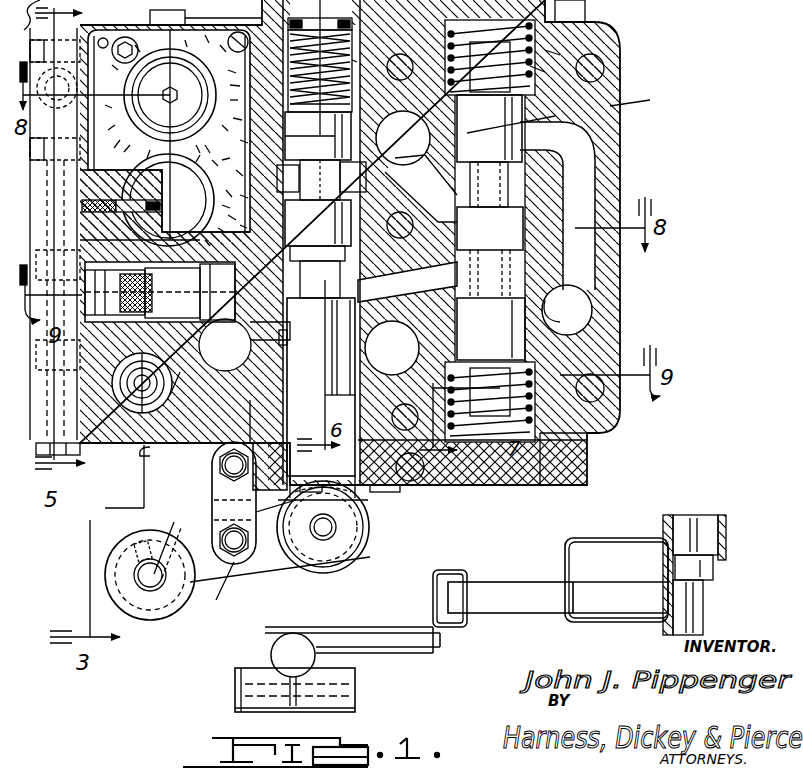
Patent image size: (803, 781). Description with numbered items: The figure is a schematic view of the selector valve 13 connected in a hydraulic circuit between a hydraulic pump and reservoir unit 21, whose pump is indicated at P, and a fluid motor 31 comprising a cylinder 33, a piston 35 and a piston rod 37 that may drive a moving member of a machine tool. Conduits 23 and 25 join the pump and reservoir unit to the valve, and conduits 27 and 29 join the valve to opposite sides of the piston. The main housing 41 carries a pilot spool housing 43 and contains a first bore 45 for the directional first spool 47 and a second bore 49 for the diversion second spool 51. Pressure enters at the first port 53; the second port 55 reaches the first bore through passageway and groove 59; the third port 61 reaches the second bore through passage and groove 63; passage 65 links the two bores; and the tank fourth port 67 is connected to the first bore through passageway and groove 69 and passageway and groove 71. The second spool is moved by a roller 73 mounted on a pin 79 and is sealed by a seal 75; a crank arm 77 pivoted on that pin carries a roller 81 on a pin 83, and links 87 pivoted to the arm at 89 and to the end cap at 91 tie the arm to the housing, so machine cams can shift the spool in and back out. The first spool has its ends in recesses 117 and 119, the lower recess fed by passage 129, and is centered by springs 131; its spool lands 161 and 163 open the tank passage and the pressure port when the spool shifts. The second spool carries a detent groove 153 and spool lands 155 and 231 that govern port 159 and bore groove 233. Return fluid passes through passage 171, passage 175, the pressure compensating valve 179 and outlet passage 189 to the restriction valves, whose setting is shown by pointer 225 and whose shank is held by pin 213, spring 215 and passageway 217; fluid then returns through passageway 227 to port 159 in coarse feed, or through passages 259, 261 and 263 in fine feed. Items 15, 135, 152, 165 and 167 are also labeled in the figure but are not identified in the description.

The selector valve 13 is at (628, 167).
The cylinder supply conduit 15 is at (514, 580).
The hydraulic pump and reservoir unit 21 is at (238, 690).
The conduit 23 is at (433, 590).
The conduit 25 is at (372, 622).
The conduit 27 is at (638, 528).
The conduit 29 is at (608, 620).
The fluid motor 31 is at (720, 520).
The cylinder 33 is at (716, 590).
The piston 35 is at (718, 560).
The piston rod 37 is at (704, 612).
The main housing 41 is at (640, 103).
The pilot spool housing 43 is at (522, 120).
The first bore 45 is at (539, 73).
The first spool 47 is at (572, 70).
The second bore 49 is at (403, 138).
The second spool 51 is at (420, 188).
The first port 53 is at (489, 128).
The second port 55 is at (490, 77).
The passageway and annular bore groove 59 is at (412, 219).
The third port 61 is at (407, 408).
The passage and annular bore groove 63 is at (392, 348).
The passage 65 is at (407, 282).
The fourth port 67 is at (592, 312).
The passageway and groove 69 is at (567, 310).
The passageway and groove 71 is at (567, 140).
The roller 73 is at (140, 322).
The seal 75 is at (366, 582).
The crank arm 77 is at (250, 572).
The pin 79 is at (337, 527).
The roller 81 is at (170, 612).
The pin 83 is at (230, 497).
The links 87 is at (212, 492).
The pivot 89 is at (217, 590).
The pivot 91 is at (238, 421).
The recess 117 is at (570, 20).
The recess 119 is at (585, 438).
The passage 129 is at (526, 402).
The springs 131 is at (461, 467).
The housing base 135 is at (480, 488).
The spring 152 is at (355, 55).
The groove 153 is at (318, 136).
The spool land 155 is at (233, 345).
The port 159 is at (321, 203).
The spool land 161 is at (491, 305).
The spool land 163 is at (490, 206).
The spool neck 165 is at (317, 272).
The spring seat 167 is at (352, 78).
The passage 171 is at (263, 355).
The passage 175 is at (196, 389).
The pressure compensating valve 179 is at (196, 475).
The outlet passage 189 is at (139, 396).
The pin 213 is at (165, 207).
The spring 215 is at (111, 103).
The passageway 217 is at (148, 200).
The pointer 225 is at (540, 55).
The passageway 227 is at (169, 135).
The spool land 231 is at (396, 156).
The bore groove 233 is at (310, 146).
The passage 259 is at (119, 95).
The passage 261 is at (150, 62).
The passage 263 is at (150, 243).
The pump P is at (293, 669).